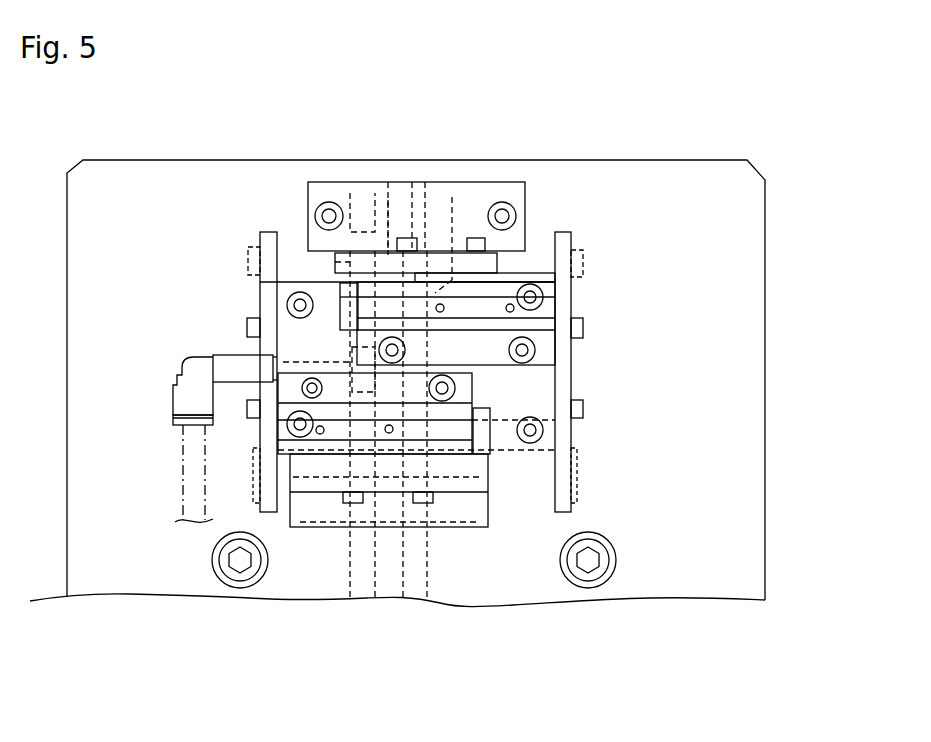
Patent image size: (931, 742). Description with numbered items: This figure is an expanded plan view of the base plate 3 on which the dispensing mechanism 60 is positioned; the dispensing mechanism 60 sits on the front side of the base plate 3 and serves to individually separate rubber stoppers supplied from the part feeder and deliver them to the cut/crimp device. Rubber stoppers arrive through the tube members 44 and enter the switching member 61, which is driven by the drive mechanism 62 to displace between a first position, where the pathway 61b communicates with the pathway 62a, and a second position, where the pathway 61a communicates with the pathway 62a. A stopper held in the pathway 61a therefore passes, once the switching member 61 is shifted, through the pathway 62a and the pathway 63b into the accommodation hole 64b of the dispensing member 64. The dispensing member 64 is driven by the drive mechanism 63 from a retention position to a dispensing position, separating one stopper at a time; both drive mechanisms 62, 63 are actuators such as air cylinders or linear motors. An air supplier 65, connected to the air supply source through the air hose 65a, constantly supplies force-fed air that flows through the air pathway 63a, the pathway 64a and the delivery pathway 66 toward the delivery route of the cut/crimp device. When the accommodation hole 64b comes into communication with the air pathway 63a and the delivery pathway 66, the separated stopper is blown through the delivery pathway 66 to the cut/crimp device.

The base plate 3 is at (733, 493).
The dispensing mechanism 60 is at (605, 225).
The switching member 61 is at (487, 510).
The pathway 61a is at (348, 512).
The pathway 61b is at (428, 512).
The tube member 44 is at (348, 567).
The drive mechanism 62 is at (462, 387).
The pathway 62a is at (545, 431).
The drive mechanism 63 is at (547, 352).
The air pathway 63a is at (350, 350).
The pathway 63b is at (453, 197).
The dispensing member 64 is at (488, 269).
The pathway 64a is at (340, 258).
The accommodation hole 64b is at (389, 200).
The air supplier 65 is at (175, 397).
The air hose 65a is at (180, 473).
The delivery pathway 66 is at (352, 197).